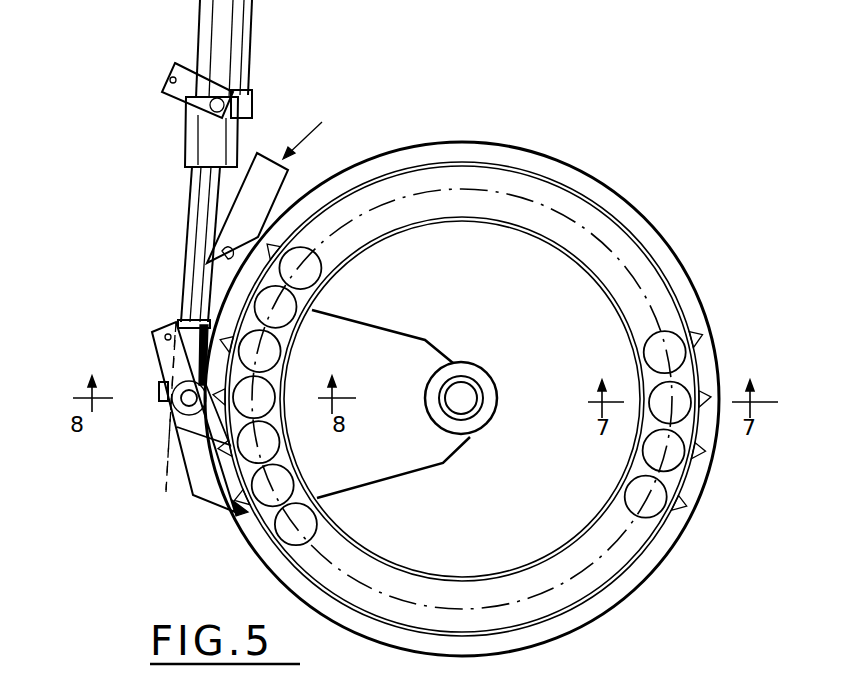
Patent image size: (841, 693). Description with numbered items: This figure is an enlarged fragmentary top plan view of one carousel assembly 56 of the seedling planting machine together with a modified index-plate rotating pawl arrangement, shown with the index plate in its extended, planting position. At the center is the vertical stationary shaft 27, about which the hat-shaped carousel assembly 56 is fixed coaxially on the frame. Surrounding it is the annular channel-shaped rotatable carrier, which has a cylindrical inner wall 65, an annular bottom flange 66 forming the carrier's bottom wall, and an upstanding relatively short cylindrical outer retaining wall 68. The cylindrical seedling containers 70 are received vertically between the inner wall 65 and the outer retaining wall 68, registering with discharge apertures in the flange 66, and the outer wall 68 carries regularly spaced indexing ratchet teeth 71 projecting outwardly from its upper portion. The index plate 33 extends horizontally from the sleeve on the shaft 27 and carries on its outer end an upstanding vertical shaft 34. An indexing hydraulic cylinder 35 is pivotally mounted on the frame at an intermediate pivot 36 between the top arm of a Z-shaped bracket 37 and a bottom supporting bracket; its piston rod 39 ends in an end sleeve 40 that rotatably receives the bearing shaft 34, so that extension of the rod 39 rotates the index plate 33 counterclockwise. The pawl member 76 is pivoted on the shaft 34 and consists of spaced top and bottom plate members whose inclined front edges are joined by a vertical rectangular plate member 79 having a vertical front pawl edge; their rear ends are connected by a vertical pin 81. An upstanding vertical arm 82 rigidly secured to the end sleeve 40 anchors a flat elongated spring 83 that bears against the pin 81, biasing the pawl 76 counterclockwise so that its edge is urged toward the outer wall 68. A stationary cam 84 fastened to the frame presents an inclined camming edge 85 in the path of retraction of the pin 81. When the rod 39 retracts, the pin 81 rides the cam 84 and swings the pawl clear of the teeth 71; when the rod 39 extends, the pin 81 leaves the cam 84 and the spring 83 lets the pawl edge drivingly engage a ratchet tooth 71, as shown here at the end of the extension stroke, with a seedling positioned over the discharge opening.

The vertical stationary shaft 27 is at (478, 386).
The index plate 33 is at (369, 323).
The upstanding vertical shaft 34 is at (182, 405).
The indexing hydraulic cylinder 35 is at (251, 25).
The pivotal connection 36 is at (187, 103).
The Z-shaped bracket 37 is at (178, 102).
The piston rod 39 is at (200, 190).
The end sleeve 40 is at (155, 419).
The carousel assembly 56 is at (690, 262).
The cylindrical inner wall 65 is at (534, 565).
The annular bottom flange 66 is at (694, 298).
The cylindrical outer retaining wall 68 is at (652, 543).
The seedling container 70 is at (285, 364).
The indexing ratchet teeth 71 is at (682, 503).
The pawl member 76 is at (153, 334).
The vertical rectangular plate member 79 is at (194, 497).
The vertical pin 81 is at (167, 341).
The upstanding vertical arm 82 is at (160, 395).
The flat elongated spring 83 is at (179, 320).
The stationary cam 84 is at (288, 181).
The inclined camming edge 85 is at (230, 250).